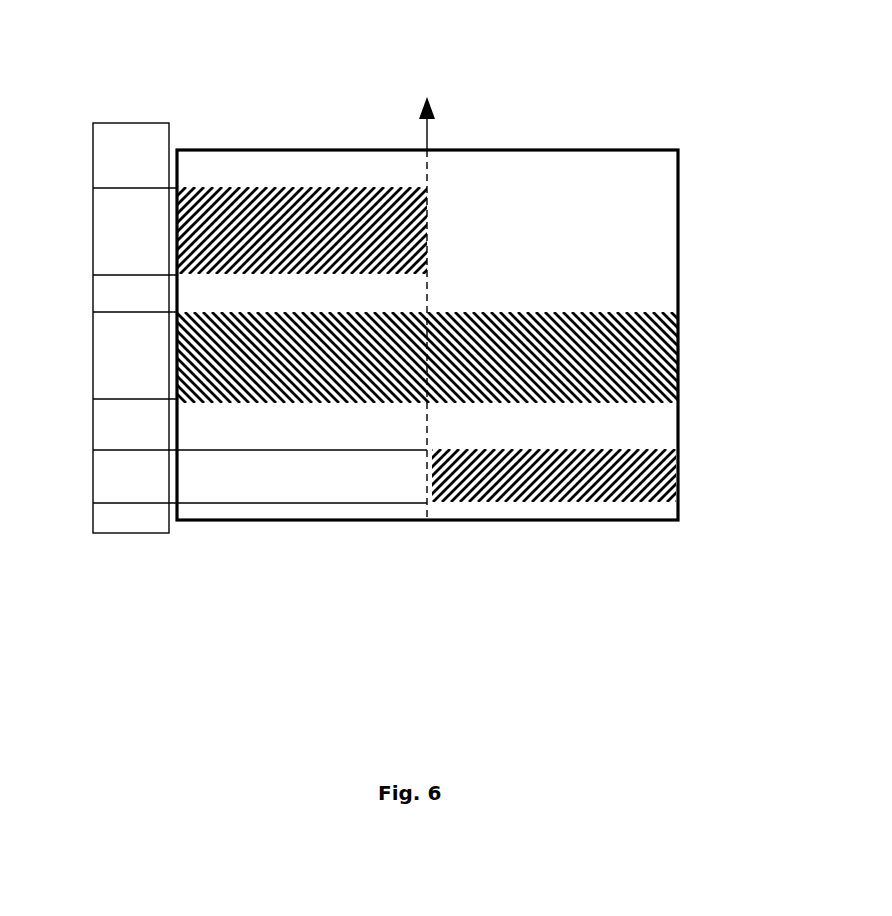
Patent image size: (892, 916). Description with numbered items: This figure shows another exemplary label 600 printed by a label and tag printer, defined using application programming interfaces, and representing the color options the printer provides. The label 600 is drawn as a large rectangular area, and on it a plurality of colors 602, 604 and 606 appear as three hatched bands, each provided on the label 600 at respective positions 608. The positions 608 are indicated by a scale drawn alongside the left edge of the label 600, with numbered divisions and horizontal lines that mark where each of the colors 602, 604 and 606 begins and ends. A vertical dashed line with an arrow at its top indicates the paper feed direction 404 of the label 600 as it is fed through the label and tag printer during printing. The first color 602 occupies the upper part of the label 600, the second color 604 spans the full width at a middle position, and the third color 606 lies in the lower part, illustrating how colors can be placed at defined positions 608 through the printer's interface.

The label 600 is at (683, 110).
The color 602 is at (312, 188).
The color 604 is at (673, 343).
The color 606 is at (665, 487).
The positions 608 is at (97, 217).
The paper feed direction 404 is at (526, 298).